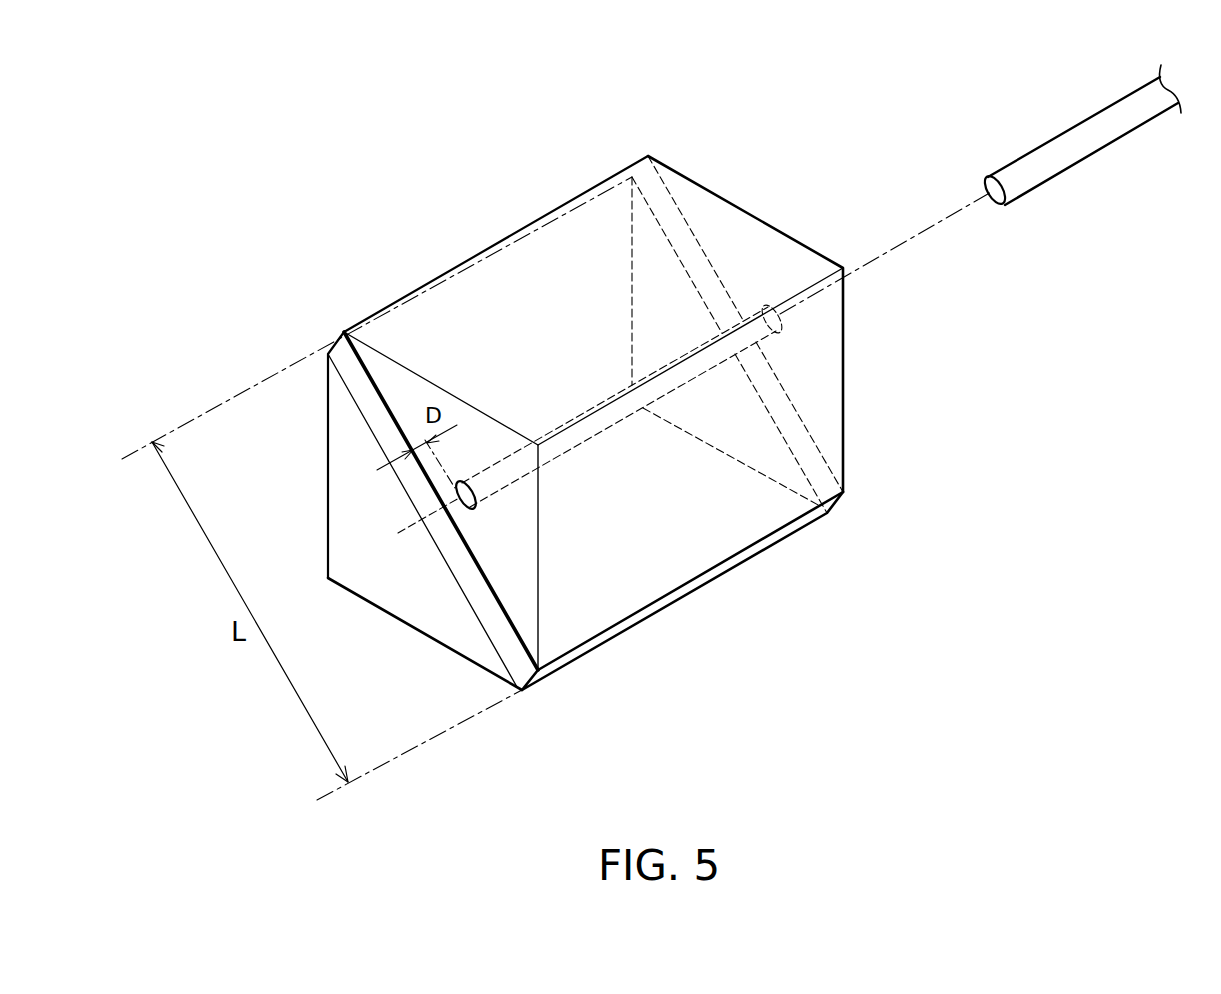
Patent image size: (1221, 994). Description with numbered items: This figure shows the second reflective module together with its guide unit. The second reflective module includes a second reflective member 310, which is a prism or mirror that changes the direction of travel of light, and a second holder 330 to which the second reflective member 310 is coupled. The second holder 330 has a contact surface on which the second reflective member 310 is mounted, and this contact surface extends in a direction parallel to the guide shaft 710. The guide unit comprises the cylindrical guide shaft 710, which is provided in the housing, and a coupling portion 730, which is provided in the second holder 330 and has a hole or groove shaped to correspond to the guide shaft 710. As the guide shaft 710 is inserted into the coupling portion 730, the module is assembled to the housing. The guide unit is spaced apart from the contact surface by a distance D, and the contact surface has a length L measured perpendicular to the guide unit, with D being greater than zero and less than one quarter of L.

The second reflective member 310 is at (340, 443).
The second holder 330 is at (683, 555).
The guide shaft 710 is at (1062, 155).
The coupling portion 730 is at (473, 509).